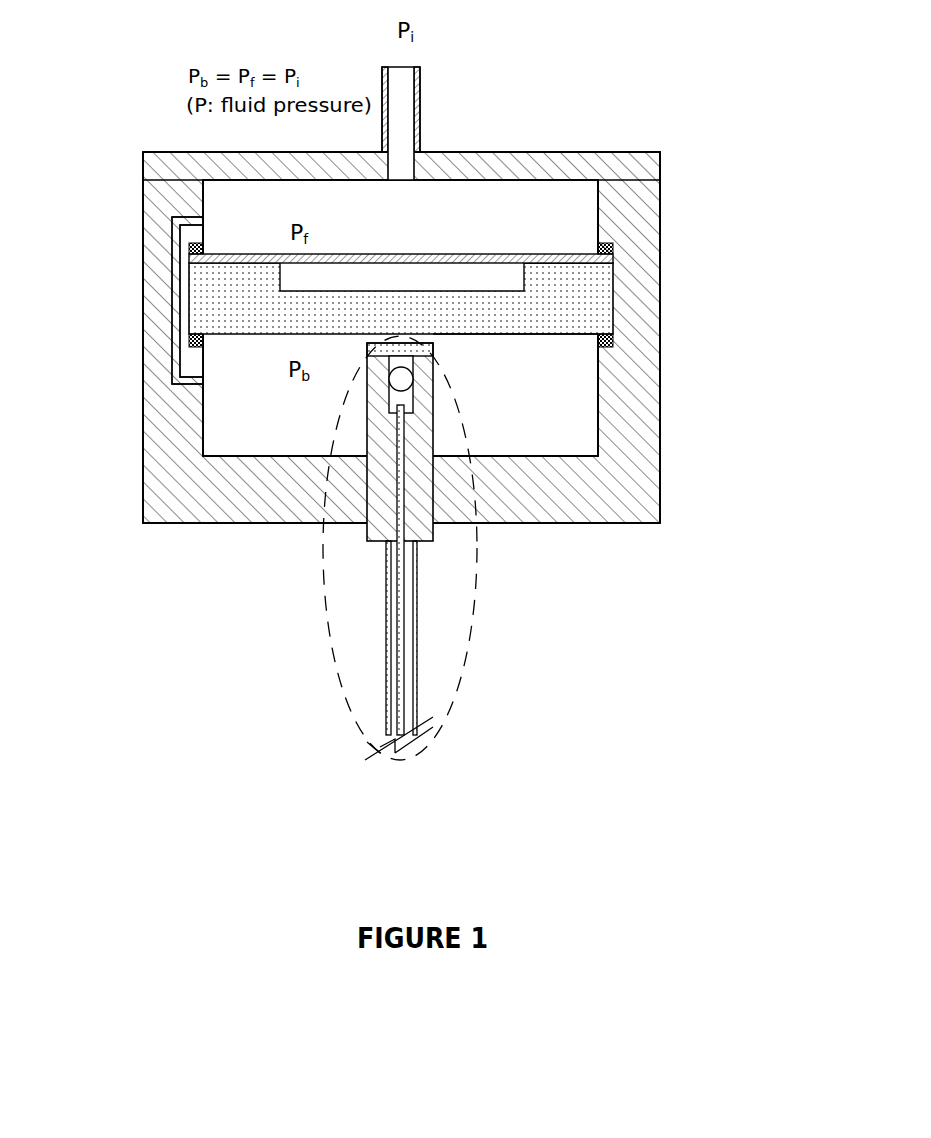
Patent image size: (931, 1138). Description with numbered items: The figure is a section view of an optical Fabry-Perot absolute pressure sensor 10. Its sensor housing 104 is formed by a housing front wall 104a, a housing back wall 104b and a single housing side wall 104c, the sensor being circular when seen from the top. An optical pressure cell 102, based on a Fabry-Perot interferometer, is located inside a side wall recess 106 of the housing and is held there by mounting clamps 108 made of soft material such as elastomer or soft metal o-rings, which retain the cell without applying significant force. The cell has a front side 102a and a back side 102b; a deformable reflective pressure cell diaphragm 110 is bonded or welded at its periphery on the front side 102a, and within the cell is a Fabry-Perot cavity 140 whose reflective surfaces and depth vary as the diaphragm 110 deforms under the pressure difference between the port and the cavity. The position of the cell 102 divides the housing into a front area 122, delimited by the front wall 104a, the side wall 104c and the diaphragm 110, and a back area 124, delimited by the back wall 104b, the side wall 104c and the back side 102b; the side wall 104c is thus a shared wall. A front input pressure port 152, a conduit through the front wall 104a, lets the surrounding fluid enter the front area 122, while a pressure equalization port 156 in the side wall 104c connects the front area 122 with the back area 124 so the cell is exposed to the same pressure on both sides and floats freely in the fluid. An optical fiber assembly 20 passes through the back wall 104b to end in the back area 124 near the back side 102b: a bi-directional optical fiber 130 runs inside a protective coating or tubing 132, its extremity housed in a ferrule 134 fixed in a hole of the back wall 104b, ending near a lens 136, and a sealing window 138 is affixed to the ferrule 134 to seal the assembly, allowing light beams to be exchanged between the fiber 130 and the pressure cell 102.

The optical Fabry-Perot absolute pressure sensor 10 is at (678, 338).
The optical fiber assembly 20 is at (345, 692).
The optical pressure cell 102 is at (602, 297).
The front side 102a is at (572, 208).
The back side 102b is at (435, 355).
The sensor housing 104 is at (627, 485).
The housing front wall 104a is at (648, 165).
The housing back wall 104b is at (258, 493).
The housing side wall 104c is at (645, 242).
The side wall recess 106 is at (188, 349).
The mounting clamps 108 is at (192, 257).
The pressure cell diaphragm 110 is at (243, 252).
The front area 122 is at (340, 200).
The back area 124 is at (225, 418).
The bi-directional optical fiber 130 is at (405, 646).
The protective coating or tubing 132 is at (418, 685).
The ferrule 134 is at (425, 517).
The lens 136 is at (390, 395).
The sealing window 138 is at (522, 346).
The Fabry-Perot cavity 140 is at (477, 272).
The front input pressure port 152 is at (420, 66).
The pressure equalization port 156 is at (175, 311).